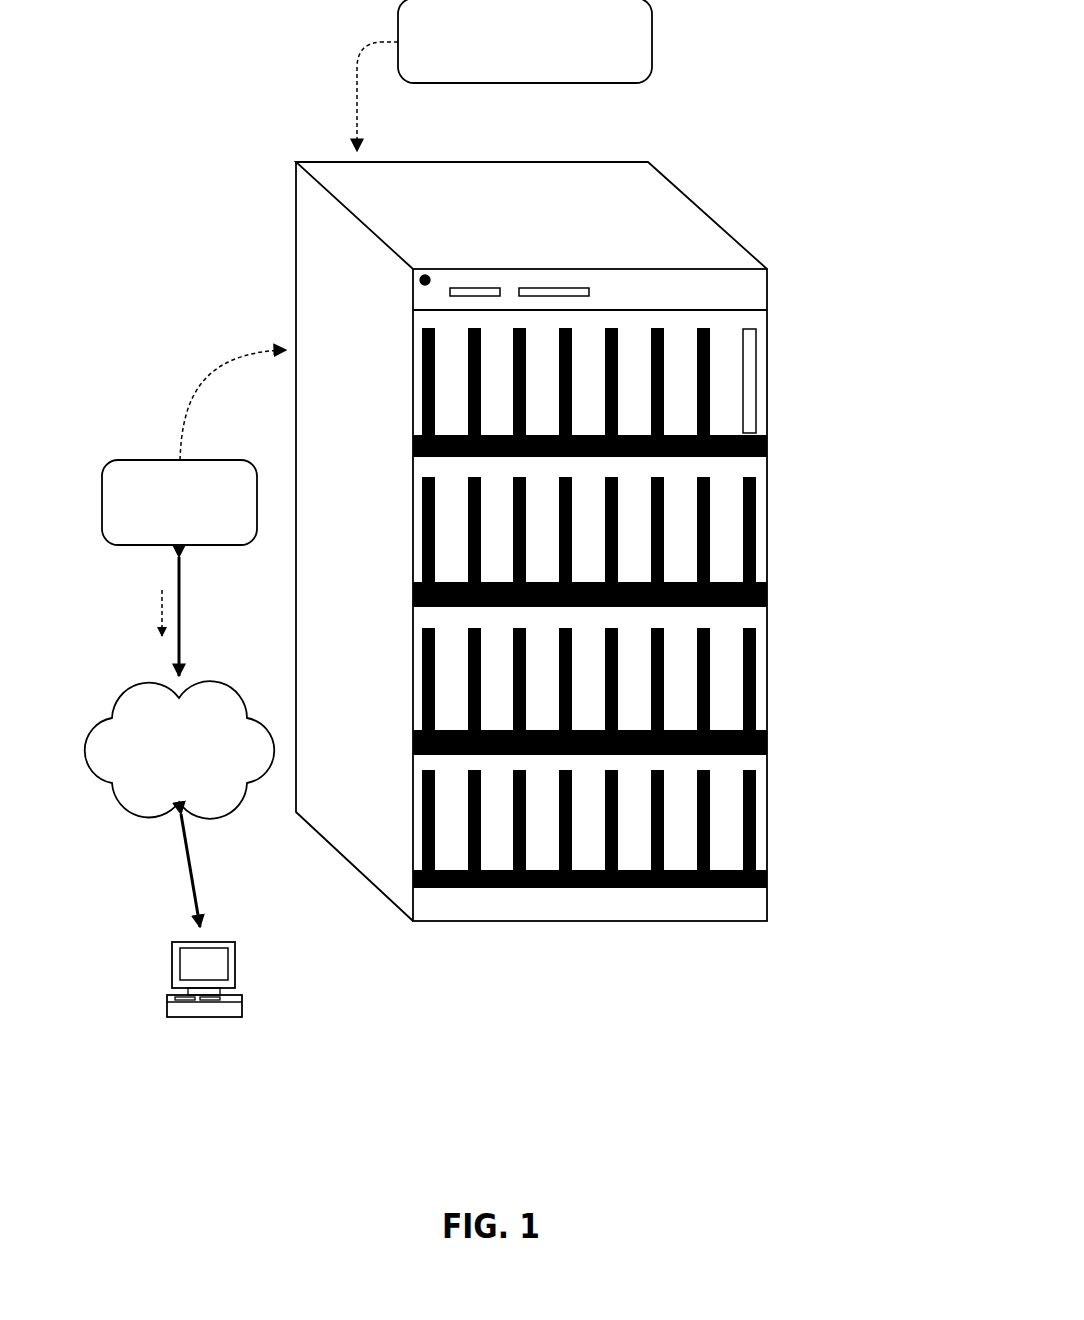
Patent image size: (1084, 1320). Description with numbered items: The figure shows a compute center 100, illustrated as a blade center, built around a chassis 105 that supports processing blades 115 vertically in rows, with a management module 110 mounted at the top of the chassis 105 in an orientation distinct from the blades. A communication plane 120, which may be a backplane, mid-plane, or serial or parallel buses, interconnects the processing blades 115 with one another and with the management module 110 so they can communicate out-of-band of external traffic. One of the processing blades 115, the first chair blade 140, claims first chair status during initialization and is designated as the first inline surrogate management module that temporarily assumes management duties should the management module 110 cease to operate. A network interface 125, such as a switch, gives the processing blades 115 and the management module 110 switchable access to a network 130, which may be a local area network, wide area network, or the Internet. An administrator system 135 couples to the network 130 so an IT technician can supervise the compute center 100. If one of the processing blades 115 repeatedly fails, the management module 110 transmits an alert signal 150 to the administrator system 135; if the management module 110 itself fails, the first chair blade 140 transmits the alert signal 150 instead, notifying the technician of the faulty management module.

The compute center 100 is at (736, 99).
The chassis 105 is at (230, 207).
The management module 110 is at (943, 281).
The processing blades 115 is at (920, 669).
The communication plane 120 is at (504, 75).
The network interface 125 is at (174, 447).
The network 130 is at (164, 771).
The administrator system 135 is at (237, 930).
The first chair blade 140 is at (917, 444).
The alert signal 150 is at (123, 616).